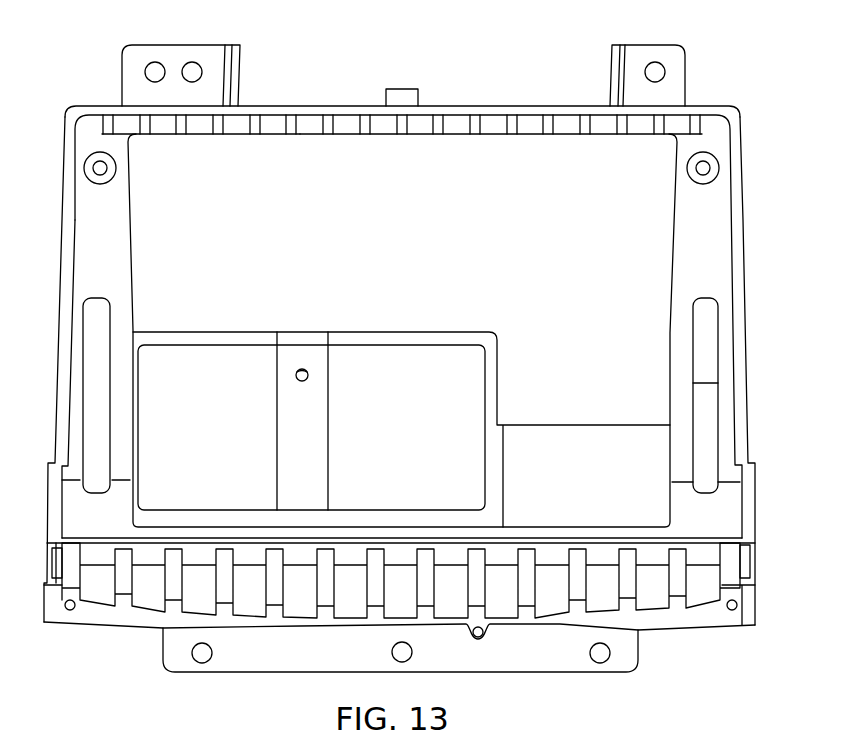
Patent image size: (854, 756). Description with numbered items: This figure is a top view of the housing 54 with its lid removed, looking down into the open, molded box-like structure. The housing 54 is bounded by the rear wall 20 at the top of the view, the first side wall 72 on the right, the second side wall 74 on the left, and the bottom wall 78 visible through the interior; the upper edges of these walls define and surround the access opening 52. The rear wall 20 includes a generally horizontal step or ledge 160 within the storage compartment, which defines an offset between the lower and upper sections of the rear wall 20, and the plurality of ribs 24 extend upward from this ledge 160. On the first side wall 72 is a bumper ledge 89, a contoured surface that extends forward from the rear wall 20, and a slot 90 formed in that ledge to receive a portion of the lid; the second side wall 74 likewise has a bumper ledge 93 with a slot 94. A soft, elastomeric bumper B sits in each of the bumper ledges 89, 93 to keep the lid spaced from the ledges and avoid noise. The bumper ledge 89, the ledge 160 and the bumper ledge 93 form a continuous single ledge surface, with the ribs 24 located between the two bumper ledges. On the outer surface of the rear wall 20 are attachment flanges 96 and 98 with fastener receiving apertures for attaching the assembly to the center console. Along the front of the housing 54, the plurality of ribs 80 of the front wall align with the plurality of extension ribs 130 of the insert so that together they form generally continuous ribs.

The housing 54 is at (732, 63).
The rear wall 20 is at (492, 110).
The ledge 160 is at (458, 126).
The plurality of ribs 24 is at (218, 128).
The attachment flange 98 is at (137, 72).
The attachment flange 96 is at (673, 62).
The bumper B is at (93, 165).
The access opening 52 is at (75, 215).
The bottom wall 78 is at (643, 248).
The bumper ledge 93 is at (88, 262).
The bumper ledge 89 is at (707, 263).
The slot 94 is at (85, 372).
The slot 90 is at (717, 352).
The second side wall 74 is at (63, 402).
The first side wall 72 is at (738, 410).
The plurality of extension ribs 130 is at (527, 557).
The plurality of ribs 80 is at (401, 541).